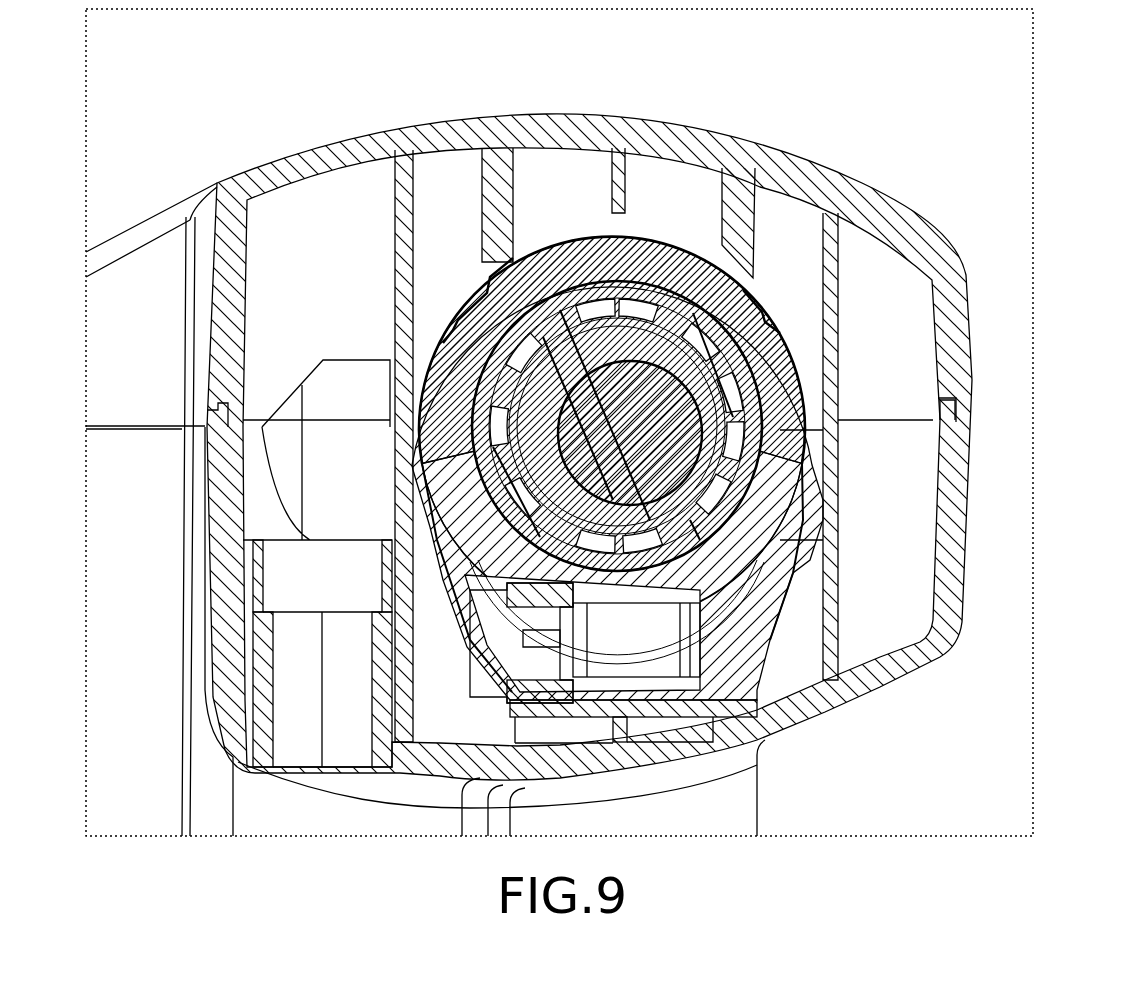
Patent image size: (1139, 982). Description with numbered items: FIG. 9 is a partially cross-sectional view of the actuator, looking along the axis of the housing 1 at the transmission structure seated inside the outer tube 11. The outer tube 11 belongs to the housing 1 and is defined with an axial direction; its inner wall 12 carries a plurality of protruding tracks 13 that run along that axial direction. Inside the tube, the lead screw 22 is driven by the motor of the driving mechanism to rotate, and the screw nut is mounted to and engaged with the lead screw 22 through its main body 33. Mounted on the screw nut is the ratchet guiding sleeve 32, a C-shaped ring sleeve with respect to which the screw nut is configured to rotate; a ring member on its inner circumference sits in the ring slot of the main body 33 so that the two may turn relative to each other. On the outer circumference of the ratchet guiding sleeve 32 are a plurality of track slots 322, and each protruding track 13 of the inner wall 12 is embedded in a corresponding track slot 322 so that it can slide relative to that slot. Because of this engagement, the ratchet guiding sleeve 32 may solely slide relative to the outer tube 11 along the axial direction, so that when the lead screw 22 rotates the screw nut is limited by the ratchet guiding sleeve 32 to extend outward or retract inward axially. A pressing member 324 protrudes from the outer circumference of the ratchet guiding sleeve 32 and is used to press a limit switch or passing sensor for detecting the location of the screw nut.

The housing 1 is at (975, 371).
The outer tube 11 is at (655, 223).
The inner wall 12 is at (790, 450).
The protruding tracks 13 is at (777, 357).
The lead screw 22 is at (628, 398).
The ratchet guiding sleeve 32 is at (800, 345).
The track slots 322 is at (773, 290).
The pressing member 324 is at (745, 630).
The main body 33 is at (523, 253).